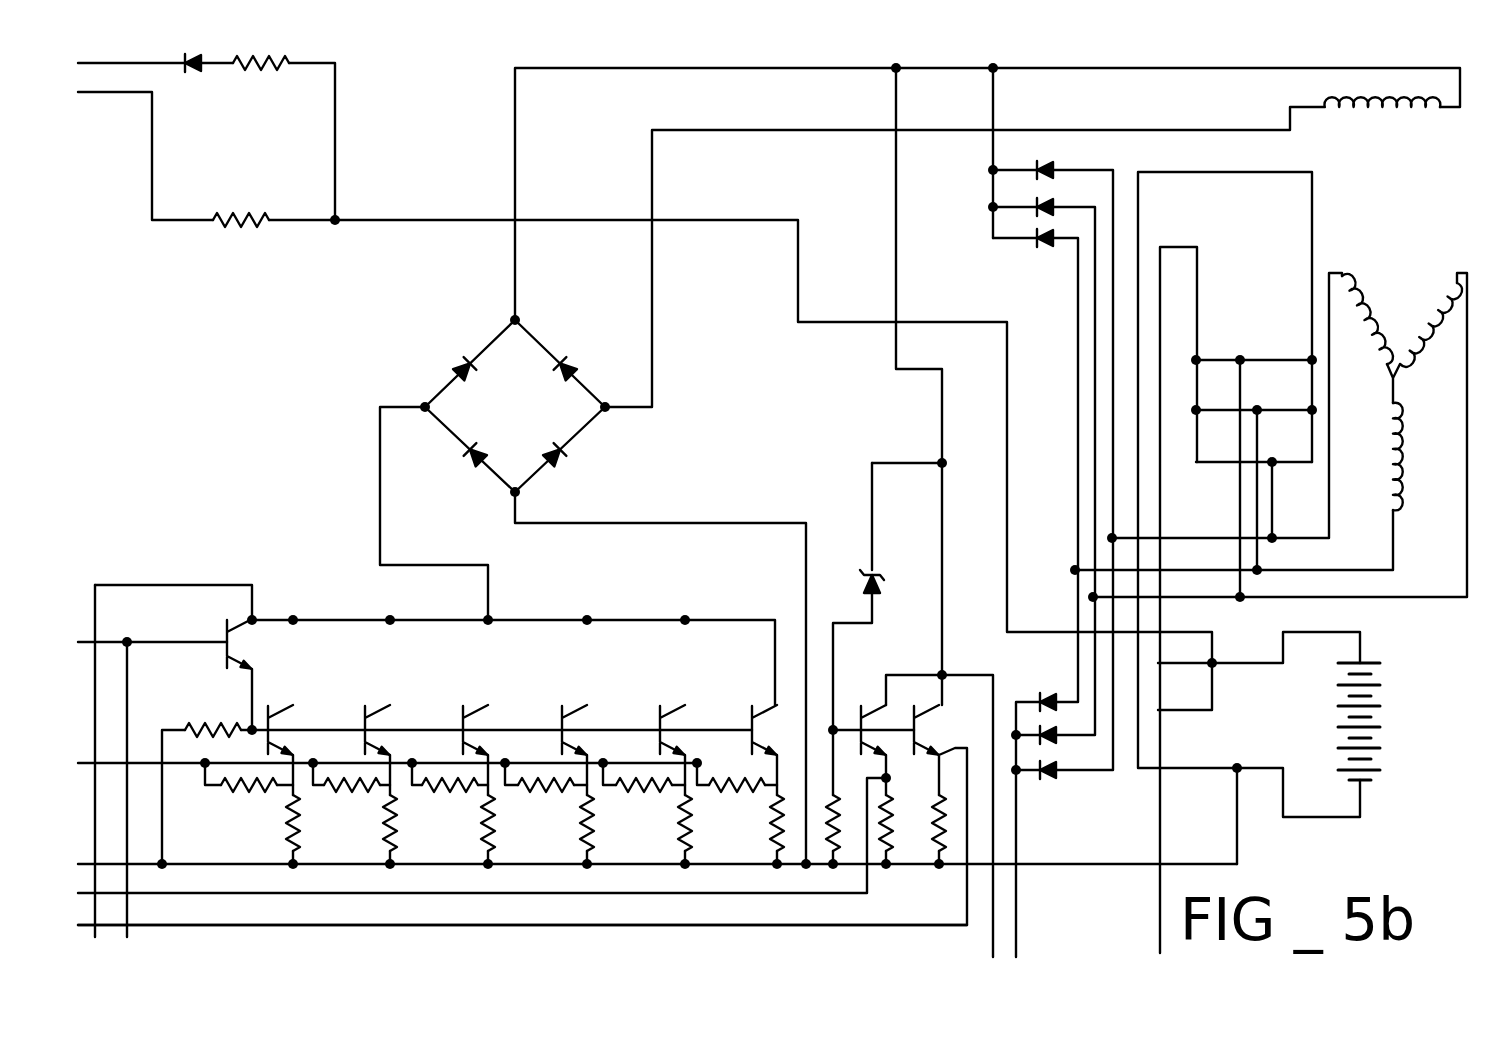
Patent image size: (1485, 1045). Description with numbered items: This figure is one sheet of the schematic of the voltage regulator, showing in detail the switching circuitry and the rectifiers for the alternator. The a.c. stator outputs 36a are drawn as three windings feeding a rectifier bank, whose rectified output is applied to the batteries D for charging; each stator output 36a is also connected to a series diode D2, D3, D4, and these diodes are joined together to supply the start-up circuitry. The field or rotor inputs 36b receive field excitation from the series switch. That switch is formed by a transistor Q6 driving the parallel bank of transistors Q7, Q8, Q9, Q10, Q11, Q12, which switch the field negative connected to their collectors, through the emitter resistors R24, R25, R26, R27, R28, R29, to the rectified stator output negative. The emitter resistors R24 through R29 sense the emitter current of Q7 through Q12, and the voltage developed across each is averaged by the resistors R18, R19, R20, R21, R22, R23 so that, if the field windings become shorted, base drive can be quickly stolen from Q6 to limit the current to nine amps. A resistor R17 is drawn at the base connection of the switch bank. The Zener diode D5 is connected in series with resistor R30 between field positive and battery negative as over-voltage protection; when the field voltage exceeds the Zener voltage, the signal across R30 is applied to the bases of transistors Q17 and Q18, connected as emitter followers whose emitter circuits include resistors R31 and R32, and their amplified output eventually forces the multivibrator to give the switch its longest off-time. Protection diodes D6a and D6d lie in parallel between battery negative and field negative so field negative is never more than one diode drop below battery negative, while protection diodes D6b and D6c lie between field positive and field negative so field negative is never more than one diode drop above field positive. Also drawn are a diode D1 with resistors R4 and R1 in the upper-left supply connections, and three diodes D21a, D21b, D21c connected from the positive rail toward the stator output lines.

The diode D1 is at (192, 75).
The resistor R4 is at (258, 75).
The resistor R1 is at (241, 240).
The protection diode D6a is at (582, 468).
The protection diode D6b is at (592, 351).
The protection diode D6c is at (444, 344).
The protection diode D6d is at (449, 473).
The field or rotor inputs 36b is at (1160, 70).
The a.c. stator outputs 36a is at (1385, 618).
The diode D21a is at (1045, 162).
The diode D21b is at (1040, 198).
The diode D21c is at (1046, 248).
The batteries D is at (1374, 708).
The Zener diode D5 is at (890, 601).
The transistor Q17 is at (869, 700).
The transistor Q18 is at (950, 730).
The resistor R30 is at (828, 838).
The resistor R31 is at (894, 828).
The resistor R32 is at (942, 845).
The series diode D2 is at (1057, 695).
The series diode D3 is at (1056, 742).
The series diode D4 is at (1055, 782).
The transistor Q6 is at (208, 635).
The resistor R17 is at (199, 716).
The series switch transistor Q7 is at (304, 722).
The series switch transistor Q8 is at (401, 722).
The series switch transistor Q9 is at (500, 722).
The series switch transistor Q10 is at (606, 722).
The series switch transistor Q11 is at (703, 722).
The series switch transistor Q12 is at (741, 742).
The averaging resistor R18 is at (255, 790).
The averaging resistor R19 is at (374, 790).
The averaging resistor R20 is at (426, 790).
The averaging resistor R21 is at (522, 790).
The averaging resistor R22 is at (618, 790).
The averaging resistor R23 is at (711, 790).
The emitter resistor R24 is at (286, 836).
The emitter resistor R25 is at (386, 836).
The emitter resistor R26 is at (482, 836).
The emitter resistor R27 is at (580, 836).
The emitter resistor R28 is at (676, 836).
The emitter resistor R29 is at (772, 836).